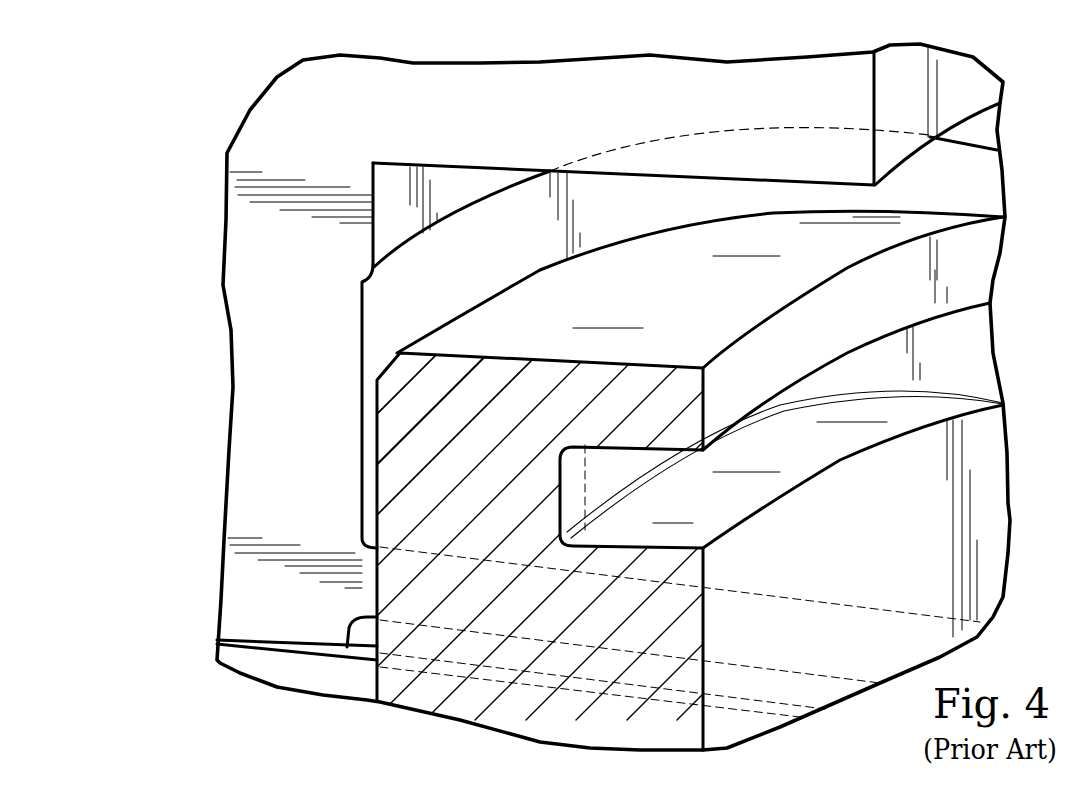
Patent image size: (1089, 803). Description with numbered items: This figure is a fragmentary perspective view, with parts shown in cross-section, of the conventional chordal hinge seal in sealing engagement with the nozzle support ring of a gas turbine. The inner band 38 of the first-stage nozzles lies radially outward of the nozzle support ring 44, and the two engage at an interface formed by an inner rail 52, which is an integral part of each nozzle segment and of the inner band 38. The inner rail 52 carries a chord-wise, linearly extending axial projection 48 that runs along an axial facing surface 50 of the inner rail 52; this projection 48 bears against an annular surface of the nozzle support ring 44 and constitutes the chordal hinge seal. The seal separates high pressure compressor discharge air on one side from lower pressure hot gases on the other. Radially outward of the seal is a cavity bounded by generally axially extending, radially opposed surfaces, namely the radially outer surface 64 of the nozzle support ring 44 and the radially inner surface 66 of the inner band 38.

The inner band 38 is at (298, 92).
The nozzle support ring 44 is at (460, 705).
The axial projection 48 is at (367, 598).
The axial facing surface 50 is at (377, 293).
The inner rail 52 is at (277, 392).
The radially outer surface 64 is at (625, 323).
The radially inner surface 66 is at (917, 152).